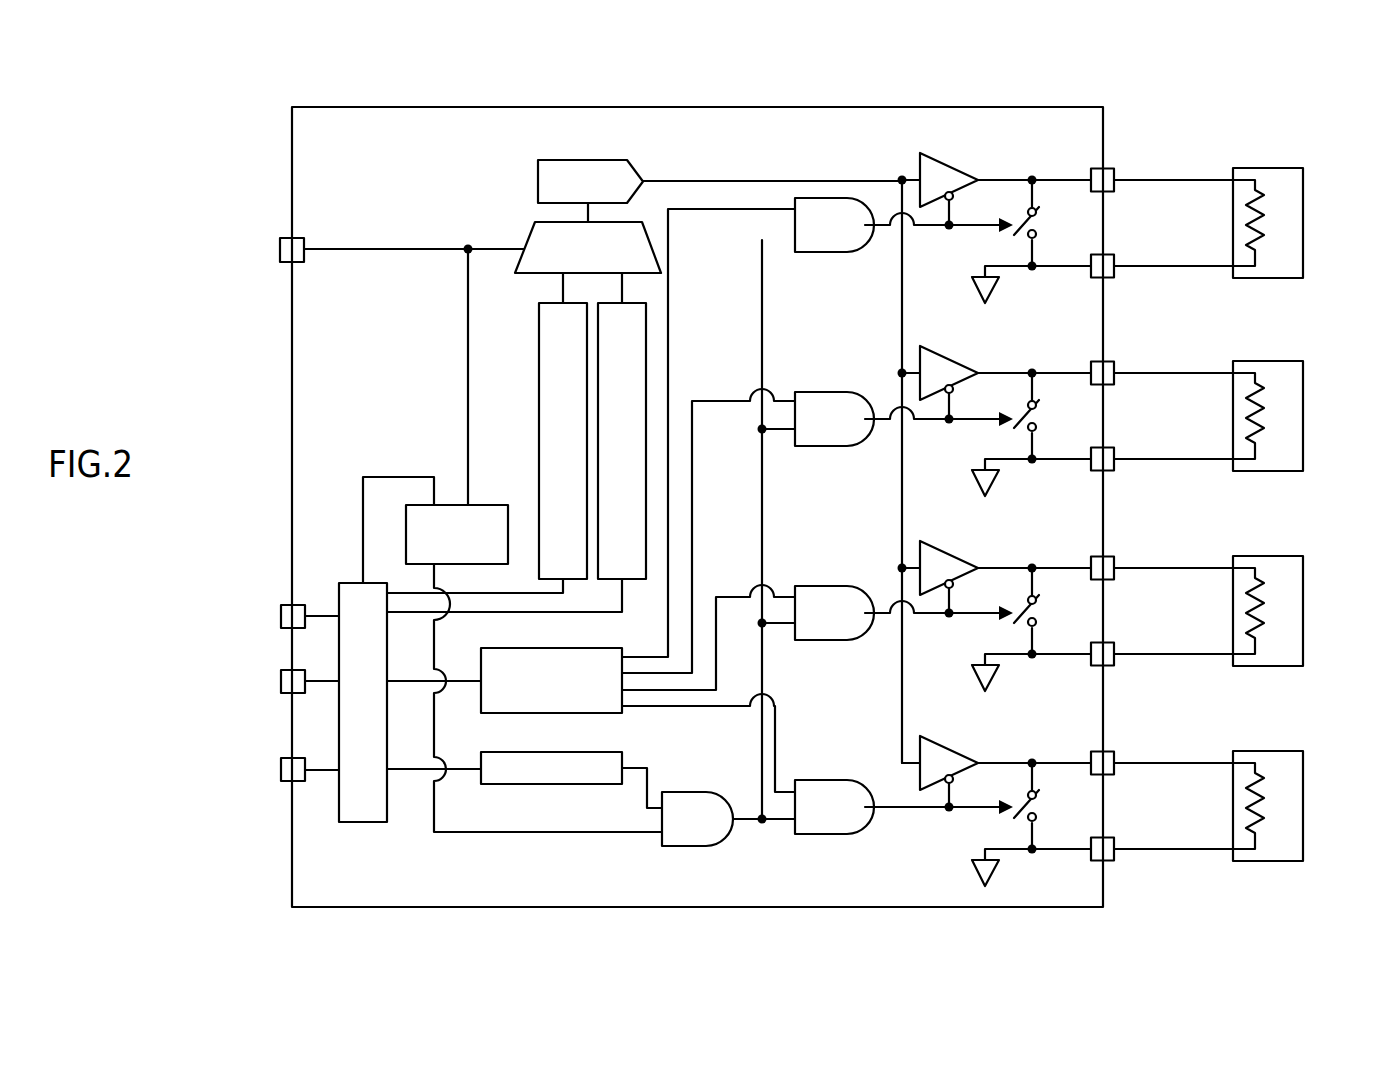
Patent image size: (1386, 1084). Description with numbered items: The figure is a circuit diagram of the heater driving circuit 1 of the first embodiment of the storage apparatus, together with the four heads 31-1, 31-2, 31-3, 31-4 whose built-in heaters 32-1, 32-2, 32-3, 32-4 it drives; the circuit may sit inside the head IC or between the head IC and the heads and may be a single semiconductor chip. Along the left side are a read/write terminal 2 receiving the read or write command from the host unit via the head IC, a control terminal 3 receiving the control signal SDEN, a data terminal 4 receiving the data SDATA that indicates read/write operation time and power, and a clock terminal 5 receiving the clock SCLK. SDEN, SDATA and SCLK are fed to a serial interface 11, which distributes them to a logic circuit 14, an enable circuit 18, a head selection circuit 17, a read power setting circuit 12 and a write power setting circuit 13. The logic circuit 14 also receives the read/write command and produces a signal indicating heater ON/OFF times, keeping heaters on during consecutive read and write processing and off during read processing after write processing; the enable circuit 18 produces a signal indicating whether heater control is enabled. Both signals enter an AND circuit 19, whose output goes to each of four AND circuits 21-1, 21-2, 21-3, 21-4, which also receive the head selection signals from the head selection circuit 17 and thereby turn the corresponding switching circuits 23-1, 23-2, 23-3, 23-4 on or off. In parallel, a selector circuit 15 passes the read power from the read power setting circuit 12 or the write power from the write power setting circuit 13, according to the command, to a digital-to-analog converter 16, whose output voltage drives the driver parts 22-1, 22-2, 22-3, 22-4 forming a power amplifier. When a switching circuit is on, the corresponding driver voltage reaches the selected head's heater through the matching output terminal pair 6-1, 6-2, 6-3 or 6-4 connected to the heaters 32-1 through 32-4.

The heater driving circuit 1 is at (738, 90).
The read/write terminal 2 is at (280, 238).
The control terminal 3 is at (281, 604).
The data terminal 4 is at (281, 671).
The clock terminal 5 is at (281, 759).
The output terminal pair 6-1 is at (1115, 170).
The output terminal pair 6-2 is at (1115, 363).
The output terminal pair 6-3 is at (1115, 558).
The output terminal pair 6-4 is at (1115, 753).
The serial interface 11 is at (363, 822).
The read power setting circuit 12 is at (624, 298).
The write power setting circuit 13 is at (569, 298).
The logic circuit 14 is at (479, 505).
The selector circuit 15 is at (528, 230).
The digital-to-analog converter (DAC) 16 is at (594, 160).
The head selection circuit 17 is at (586, 649).
The enable circuit 18 is at (576, 751).
The AND circuit 19 is at (690, 846).
The AND circuit 21-1 is at (820, 252).
The AND circuit 21-2 is at (820, 446).
The AND circuit 21-3 is at (820, 640).
The AND circuit 21-4 is at (820, 834).
The driver part 22-1 is at (940, 163).
The driver part 22-2 is at (940, 356).
The driver part 22-3 is at (940, 551).
The driver part 22-4 is at (940, 746).
The switching circuit 23-1 is at (1032, 224).
The switching circuit 23-2 is at (1032, 417).
The switching circuit 23-3 is at (1032, 612).
The switching circuit 23-4 is at (1032, 807).
The head 31-1 is at (1262, 168).
The head 31-2 is at (1262, 361).
The head 31-3 is at (1262, 556).
The head 31-4 is at (1262, 751).
The built-in heater 32-1 is at (1258, 226).
The built-in heater 32-2 is at (1258, 419).
The built-in heater 32-3 is at (1258, 614).
The built-in heater 32-4 is at (1258, 809).